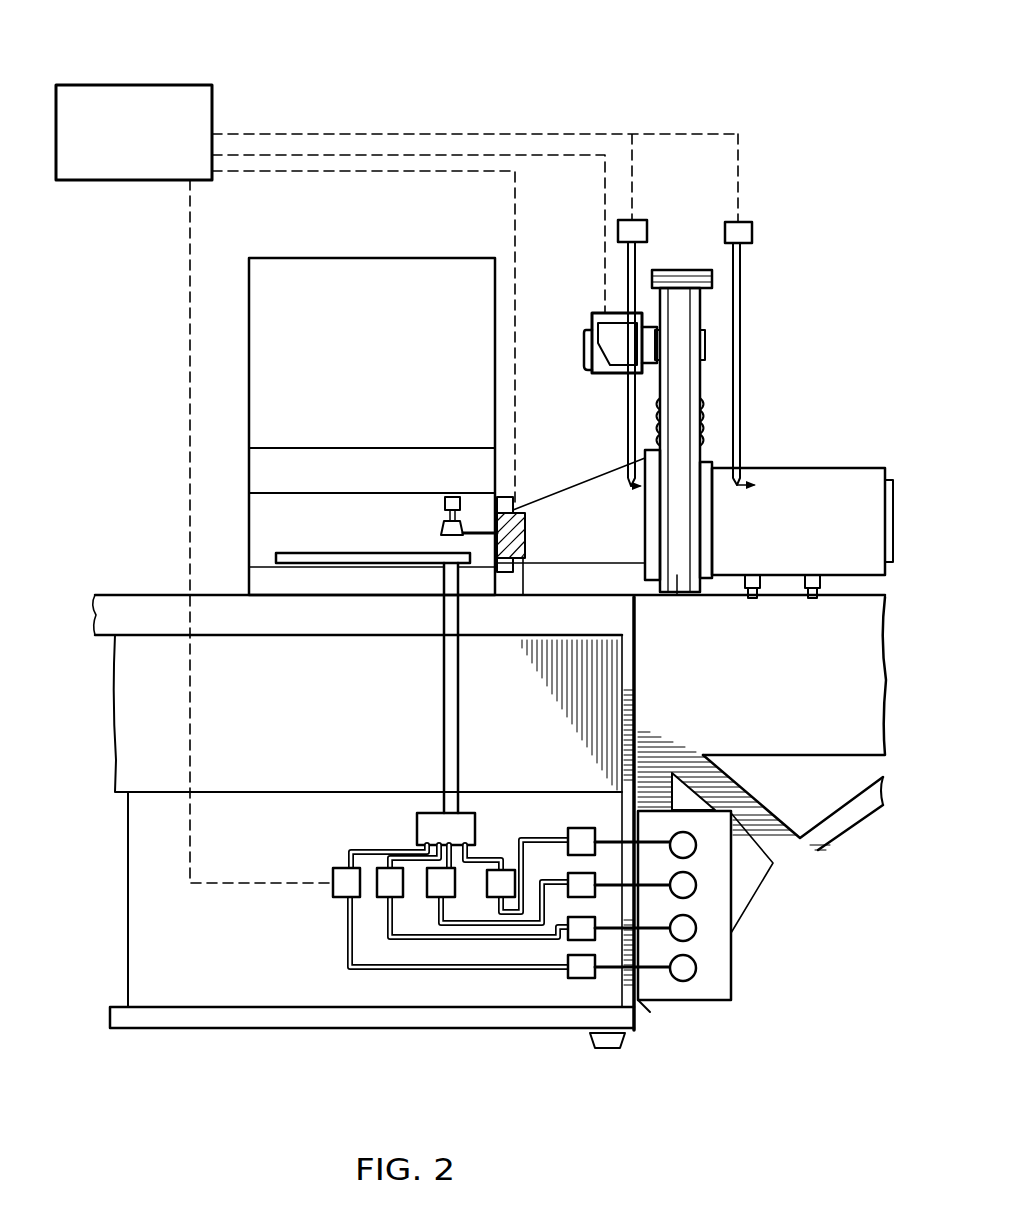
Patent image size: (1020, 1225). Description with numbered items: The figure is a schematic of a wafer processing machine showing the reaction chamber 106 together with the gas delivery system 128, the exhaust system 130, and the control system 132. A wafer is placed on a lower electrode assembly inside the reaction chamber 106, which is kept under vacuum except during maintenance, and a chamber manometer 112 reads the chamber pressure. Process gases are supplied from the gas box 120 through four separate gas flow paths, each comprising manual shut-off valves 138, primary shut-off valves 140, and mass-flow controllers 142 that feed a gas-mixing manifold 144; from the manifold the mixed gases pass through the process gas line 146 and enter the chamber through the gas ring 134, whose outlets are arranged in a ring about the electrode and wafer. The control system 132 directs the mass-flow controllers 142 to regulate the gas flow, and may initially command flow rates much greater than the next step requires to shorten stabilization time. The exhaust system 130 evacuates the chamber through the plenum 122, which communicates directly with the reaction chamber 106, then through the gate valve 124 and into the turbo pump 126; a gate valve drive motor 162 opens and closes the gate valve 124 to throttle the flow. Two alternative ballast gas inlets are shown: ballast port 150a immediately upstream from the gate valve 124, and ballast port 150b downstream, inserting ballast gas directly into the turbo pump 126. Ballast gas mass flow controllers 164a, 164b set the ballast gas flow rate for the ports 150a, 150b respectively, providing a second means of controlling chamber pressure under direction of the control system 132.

The reaction chamber 106 is at (228, 517).
The chamber manometer 112 is at (445, 528).
The gas box 120 is at (243, 983).
The plenum 122 is at (585, 513).
The gate valve 124 is at (678, 578).
The turbo pump 126 is at (836, 529).
The gas delivery system 128 is at (488, 1052).
The exhaust system 130 is at (706, 106).
The control system 132 is at (143, 107).
The gas ring 134 is at (313, 553).
The manual shut-off valves 138 is at (690, 853).
The primary shut-off valves 140 is at (573, 938).
The mass-flow controllers 142 is at (497, 887).
The gas-mixing manifold 144 is at (420, 828).
The process gas line 146 is at (450, 698).
The ballast port 150a is at (623, 453).
The ballast port 150b is at (737, 453).
The gate valve drive motor 162 is at (599, 318).
The ballast gas mass flow controller 164a is at (635, 230).
The ballast gas mass flow controller 164b is at (745, 232).